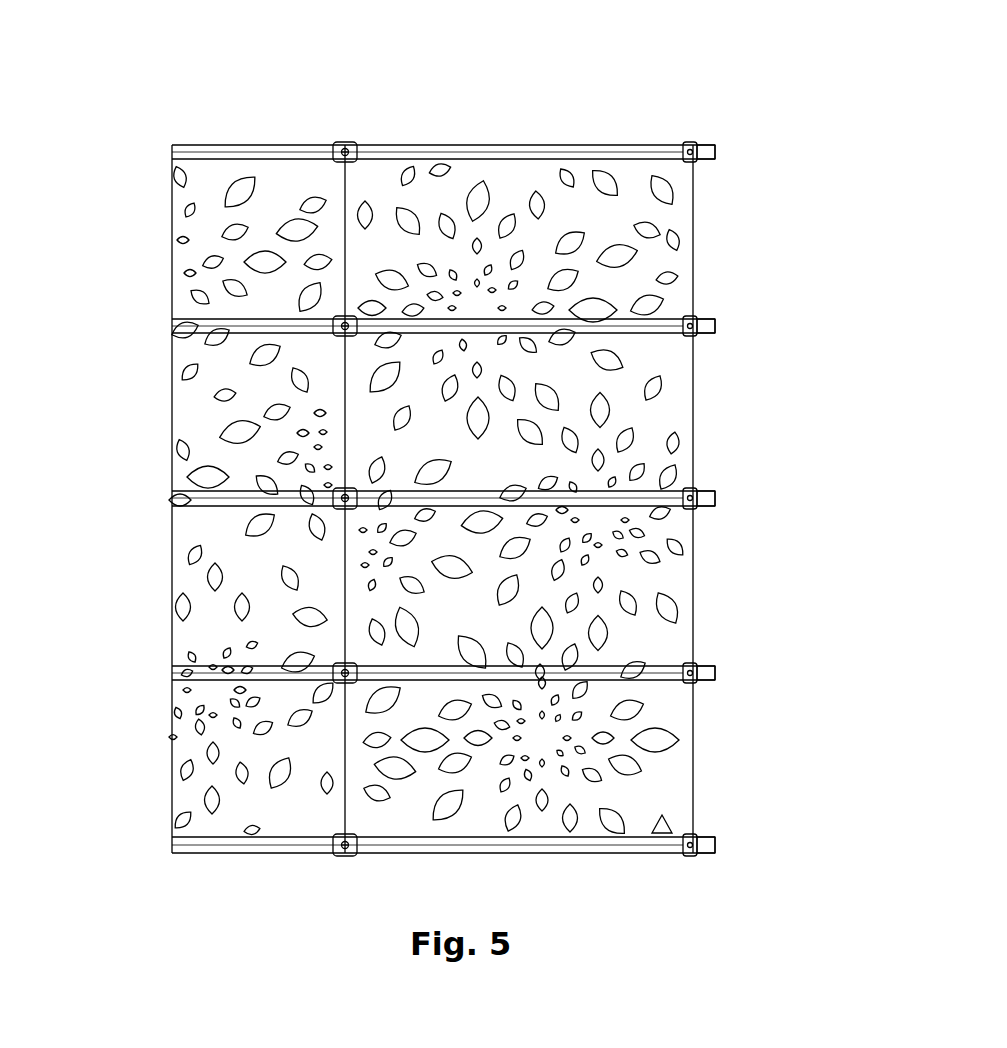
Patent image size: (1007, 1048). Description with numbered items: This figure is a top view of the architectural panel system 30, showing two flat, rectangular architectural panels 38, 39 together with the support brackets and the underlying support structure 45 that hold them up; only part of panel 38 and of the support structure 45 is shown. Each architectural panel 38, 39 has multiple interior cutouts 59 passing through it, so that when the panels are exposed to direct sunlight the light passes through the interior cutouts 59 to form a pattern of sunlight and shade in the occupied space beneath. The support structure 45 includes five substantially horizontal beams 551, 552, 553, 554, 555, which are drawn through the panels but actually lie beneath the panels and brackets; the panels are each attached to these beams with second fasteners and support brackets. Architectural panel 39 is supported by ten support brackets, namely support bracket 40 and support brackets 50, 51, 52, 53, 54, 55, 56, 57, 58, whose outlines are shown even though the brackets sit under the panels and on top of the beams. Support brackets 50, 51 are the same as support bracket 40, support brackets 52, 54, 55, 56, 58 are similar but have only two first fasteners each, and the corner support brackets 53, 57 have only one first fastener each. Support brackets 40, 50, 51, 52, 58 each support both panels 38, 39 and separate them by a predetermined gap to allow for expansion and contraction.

The architectural panel system 30 is at (168, 108).
The architectural panel 38 is at (205, 188).
The architectural panel 39 is at (375, 178).
The support bracket 40 is at (335, 675).
The support structure 45 is at (713, 682).
The support bracket 50 is at (335, 328).
The support bracket 51 is at (335, 501).
The support bracket 52 is at (344, 142).
The support bracket 53 is at (695, 146).
The support bracket 54 is at (698, 318).
The support bracket 55 is at (697, 490).
The support bracket 56 is at (698, 665).
The support bracket 57 is at (700, 856).
The support bracket 58 is at (335, 851).
The interior cutouts 59 is at (244, 178).
The beam 551 is at (717, 145).
The beam 552 is at (713, 318).
The beam 553 is at (713, 490).
The beam 554 is at (716, 665).
The beam 555 is at (713, 837).